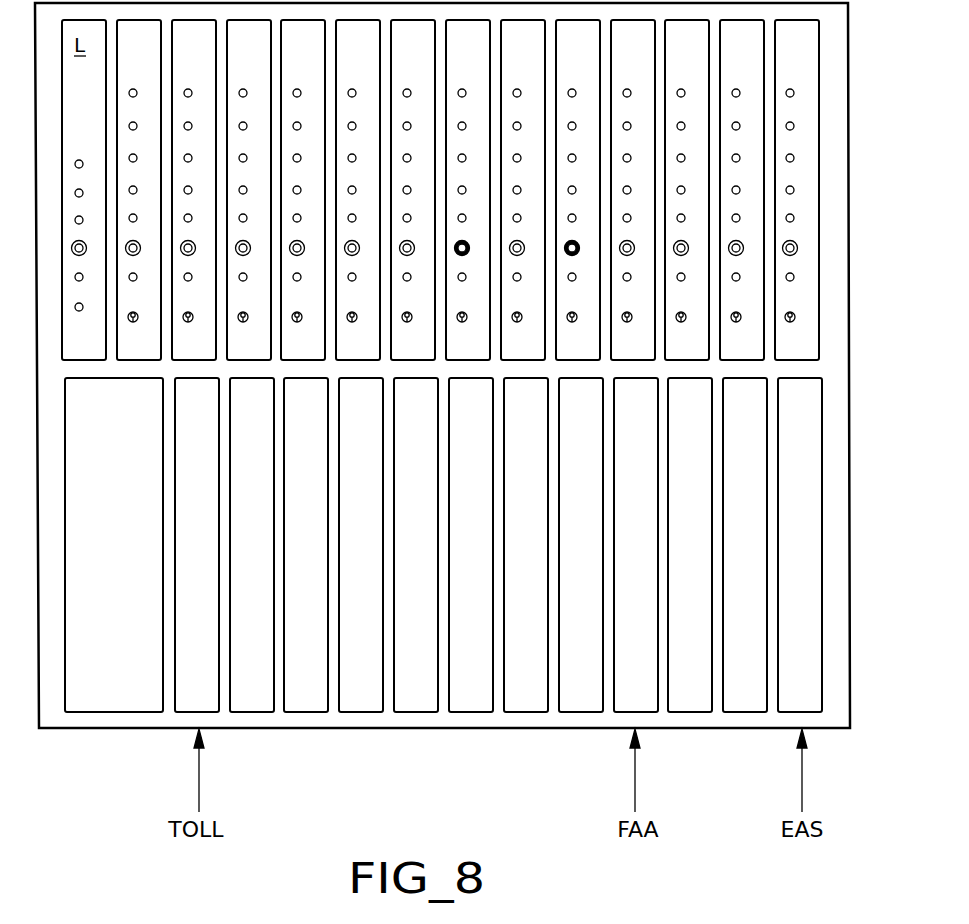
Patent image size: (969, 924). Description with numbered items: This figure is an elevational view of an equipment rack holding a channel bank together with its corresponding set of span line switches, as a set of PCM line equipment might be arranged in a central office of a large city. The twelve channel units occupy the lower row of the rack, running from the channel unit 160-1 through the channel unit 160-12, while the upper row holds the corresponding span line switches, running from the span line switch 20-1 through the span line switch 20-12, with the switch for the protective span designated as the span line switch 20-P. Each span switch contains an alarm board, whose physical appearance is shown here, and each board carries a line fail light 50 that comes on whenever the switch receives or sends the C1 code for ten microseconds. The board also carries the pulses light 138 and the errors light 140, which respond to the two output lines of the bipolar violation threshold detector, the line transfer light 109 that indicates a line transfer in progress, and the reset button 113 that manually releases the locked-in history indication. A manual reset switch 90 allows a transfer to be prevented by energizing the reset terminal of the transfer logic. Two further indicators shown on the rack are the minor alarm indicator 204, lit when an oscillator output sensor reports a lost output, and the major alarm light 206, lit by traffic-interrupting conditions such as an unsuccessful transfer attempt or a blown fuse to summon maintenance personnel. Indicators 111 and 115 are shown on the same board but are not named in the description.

The minor alarm indicator 204 is at (76, 218).
The major alarm light 206 is at (82, 191).
The span line switch for the protective span 20-P is at (138, 347).
The span line switch 20-12 is at (191, 345).
The span line switch 20-1 is at (801, 218).
The pulses light 138 is at (787, 91).
The errors light 140 is at (793, 123).
The line fail light 50 is at (794, 157).
The line transfer light 109 is at (794, 190).
The lamp 111 is at (794, 217).
The reset button 113 is at (798, 246).
The lamp 115 is at (794, 277).
The manual reset switch 90 is at (795, 317).
The channel unit 160-12 is at (200, 660).
The channel unit 160-1 is at (820, 666).